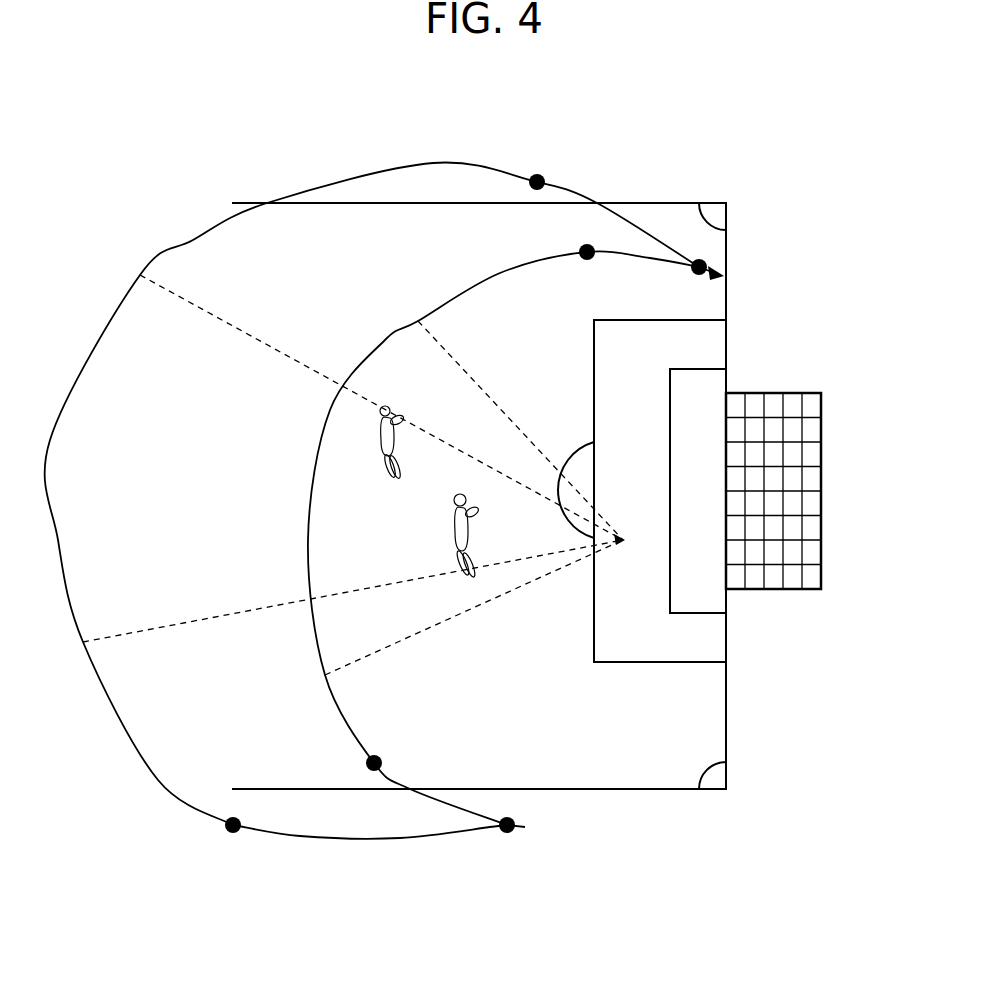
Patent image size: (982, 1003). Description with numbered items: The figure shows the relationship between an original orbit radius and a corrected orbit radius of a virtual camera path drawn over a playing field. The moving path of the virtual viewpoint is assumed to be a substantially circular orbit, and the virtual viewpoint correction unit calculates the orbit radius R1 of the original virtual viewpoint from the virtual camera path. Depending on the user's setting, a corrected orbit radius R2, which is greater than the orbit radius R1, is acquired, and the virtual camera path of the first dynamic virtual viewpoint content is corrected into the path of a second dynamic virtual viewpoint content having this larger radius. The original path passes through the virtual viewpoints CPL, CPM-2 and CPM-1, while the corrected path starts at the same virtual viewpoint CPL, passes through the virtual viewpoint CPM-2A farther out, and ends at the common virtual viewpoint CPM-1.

The virtual viewpoint CPM-2A is at (567, 166).
The virtual viewpoint CPM-2 is at (594, 269).
The virtual viewpoint CPM-1 is at (750, 262).
The orbit radius of the corrected virtual viewpoint R2 is at (353, 458).
The orbit radius of the original virtual viewpoint R1 is at (474, 498).
The virtual viewpoint CPL is at (510, 842).